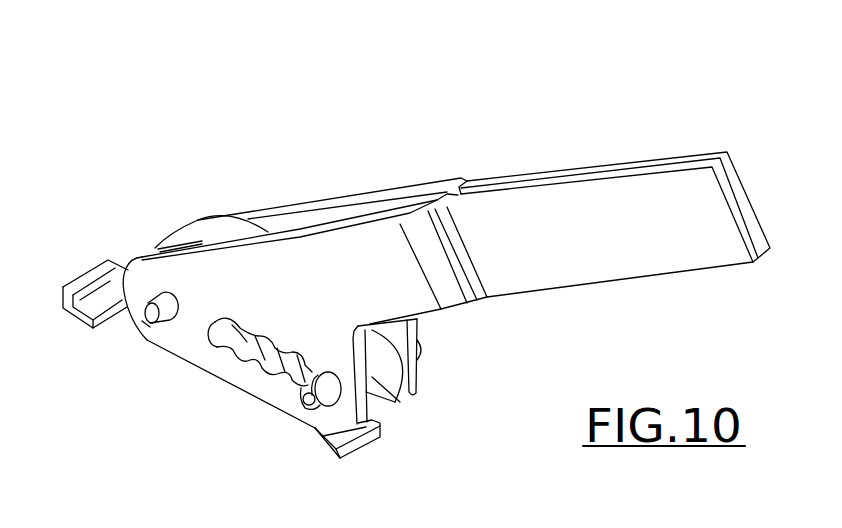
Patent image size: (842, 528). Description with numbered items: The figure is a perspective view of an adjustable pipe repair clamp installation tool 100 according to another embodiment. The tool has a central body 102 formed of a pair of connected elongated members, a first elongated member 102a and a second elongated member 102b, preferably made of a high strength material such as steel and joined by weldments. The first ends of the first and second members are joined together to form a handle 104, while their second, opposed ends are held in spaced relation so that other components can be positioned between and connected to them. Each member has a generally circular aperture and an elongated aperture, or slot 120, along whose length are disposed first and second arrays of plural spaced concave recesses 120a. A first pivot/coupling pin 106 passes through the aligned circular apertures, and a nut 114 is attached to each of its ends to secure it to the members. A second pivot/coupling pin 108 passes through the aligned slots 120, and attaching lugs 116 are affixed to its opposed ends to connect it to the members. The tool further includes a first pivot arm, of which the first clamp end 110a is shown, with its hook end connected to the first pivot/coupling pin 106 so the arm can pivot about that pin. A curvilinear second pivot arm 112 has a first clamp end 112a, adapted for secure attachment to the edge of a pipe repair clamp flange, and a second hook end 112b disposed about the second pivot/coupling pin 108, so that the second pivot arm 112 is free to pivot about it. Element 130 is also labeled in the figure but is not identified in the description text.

The adjustable pipe repair clamp installation tool 100 is at (478, 120).
The central body 102 is at (532, 178).
The first elongated member 102a is at (337, 202).
The second elongated member 102b is at (402, 297).
The handle 104 is at (663, 200).
The first pivot/coupling pin 106 is at (142, 321).
The second pivot/coupling pin 108 is at (306, 402).
The first clamp end 110a is at (365, 440).
The second pivot arm 112 is at (205, 228).
The first clamp end 112a is at (97, 280).
The second hook end 112b is at (377, 370).
The nut 114 is at (167, 312).
The attaching lug 116 is at (328, 392).
The elongated aperture (slot) 120 is at (260, 340).
The concave recesses 120a is at (303, 377).
The strap 130 is at (129, 522).